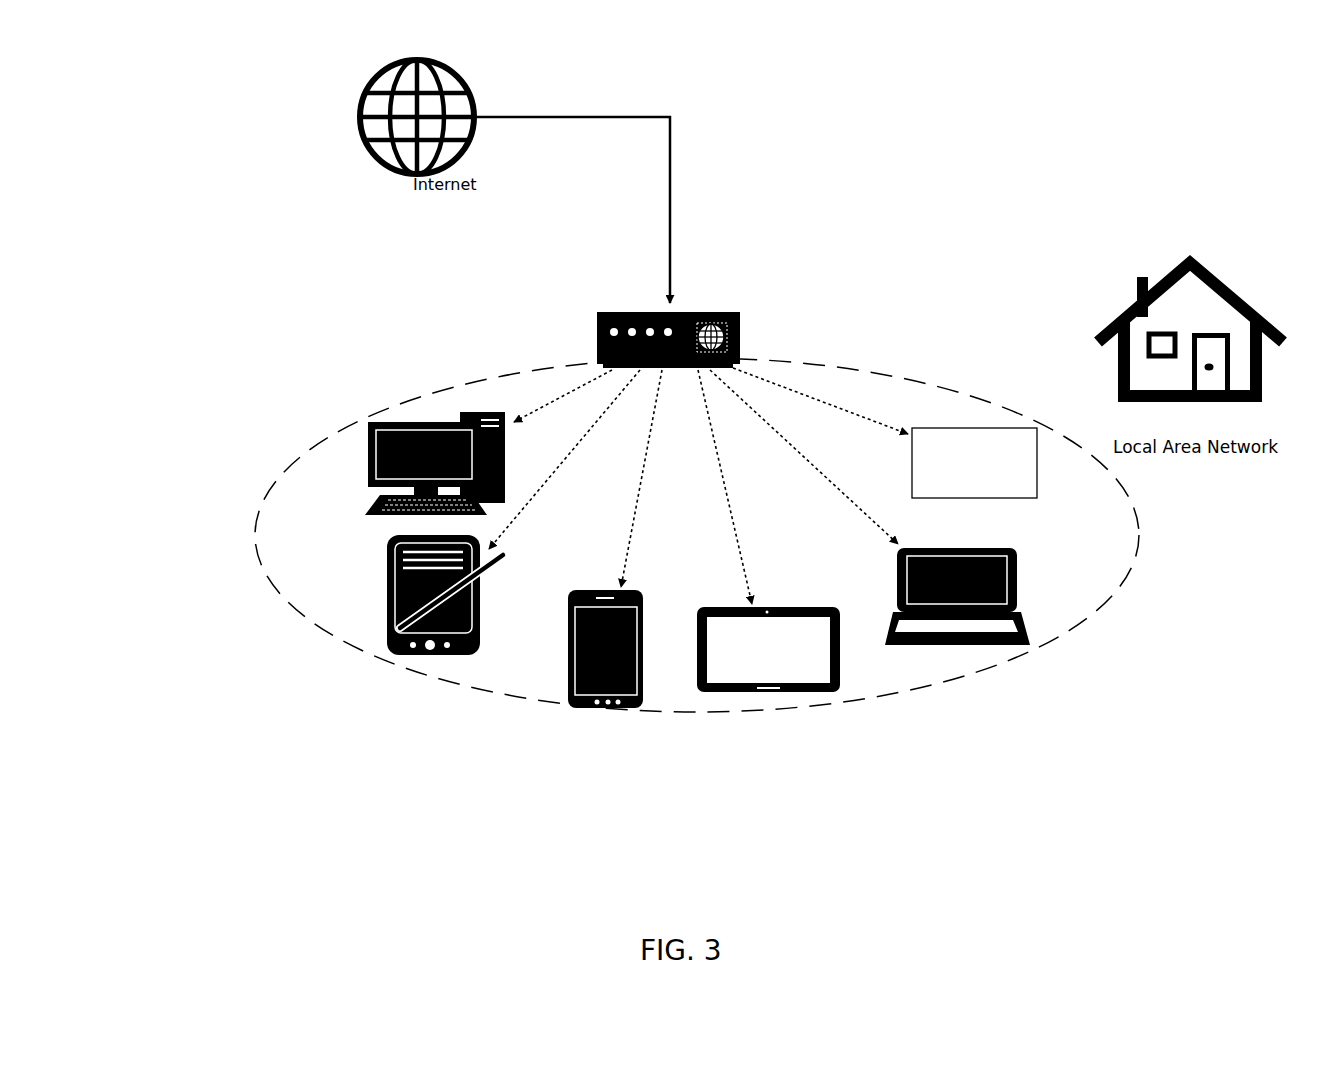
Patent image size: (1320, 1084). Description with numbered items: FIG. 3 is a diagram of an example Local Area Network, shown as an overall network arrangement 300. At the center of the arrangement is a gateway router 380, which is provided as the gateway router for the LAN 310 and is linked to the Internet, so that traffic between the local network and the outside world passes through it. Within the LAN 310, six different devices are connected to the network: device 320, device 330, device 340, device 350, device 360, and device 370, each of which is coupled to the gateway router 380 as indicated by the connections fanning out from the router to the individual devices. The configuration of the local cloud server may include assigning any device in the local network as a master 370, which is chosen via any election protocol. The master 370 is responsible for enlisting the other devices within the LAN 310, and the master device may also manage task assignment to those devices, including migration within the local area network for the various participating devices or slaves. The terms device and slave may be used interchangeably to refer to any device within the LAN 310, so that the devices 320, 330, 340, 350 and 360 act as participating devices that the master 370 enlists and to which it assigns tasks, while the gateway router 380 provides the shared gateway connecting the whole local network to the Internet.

The network environment 300 is at (184, 82).
The LAN 310 is at (367, 420).
The device 320 is at (380, 515).
The device 330 is at (385, 643).
The device 340 is at (605, 708).
The device 350 is at (803, 688).
The device 360 is at (957, 682).
The master 370 is at (1037, 462).
The gateway router 380 is at (742, 322).